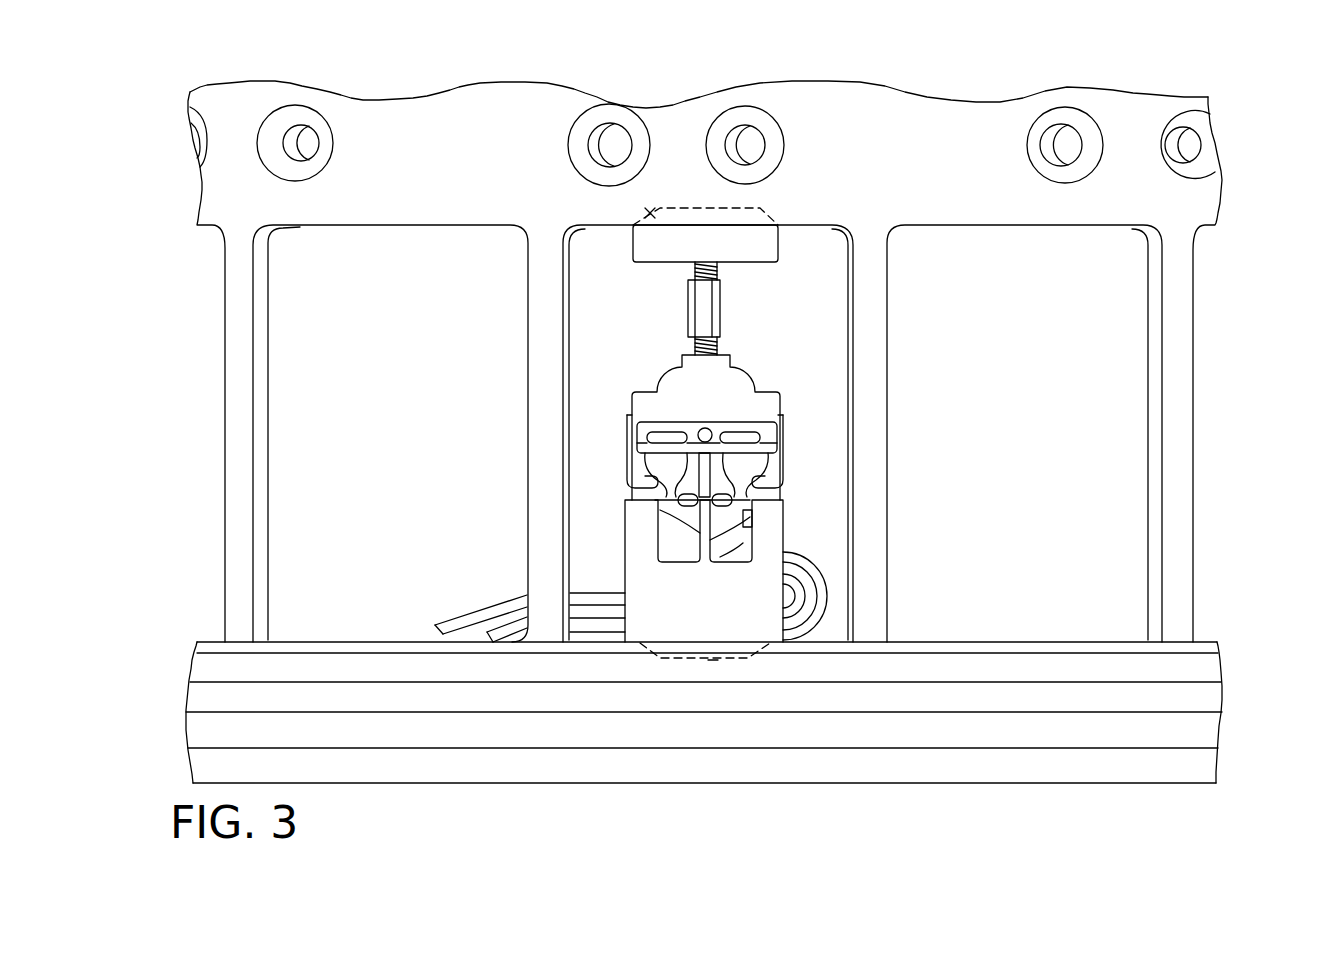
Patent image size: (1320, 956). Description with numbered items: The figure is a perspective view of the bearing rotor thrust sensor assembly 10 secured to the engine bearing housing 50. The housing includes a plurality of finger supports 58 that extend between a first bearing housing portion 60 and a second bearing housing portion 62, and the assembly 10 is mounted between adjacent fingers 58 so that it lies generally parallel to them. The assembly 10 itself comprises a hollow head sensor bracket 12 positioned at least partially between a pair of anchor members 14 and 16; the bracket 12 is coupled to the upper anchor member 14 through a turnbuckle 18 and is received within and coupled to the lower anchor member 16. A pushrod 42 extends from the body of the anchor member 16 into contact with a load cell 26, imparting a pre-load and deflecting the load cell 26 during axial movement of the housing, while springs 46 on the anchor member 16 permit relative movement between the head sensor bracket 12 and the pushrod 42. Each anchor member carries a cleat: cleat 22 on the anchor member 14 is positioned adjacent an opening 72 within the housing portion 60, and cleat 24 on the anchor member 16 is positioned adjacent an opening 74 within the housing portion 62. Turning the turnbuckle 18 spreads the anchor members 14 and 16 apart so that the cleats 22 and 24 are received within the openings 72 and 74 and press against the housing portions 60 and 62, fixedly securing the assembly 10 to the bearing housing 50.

The bearing rotor thrust sensor assembly 10 is at (607, 330).
The head sensor bracket 12 is at (652, 386).
The anchor member 14 is at (763, 266).
The anchor member 16 is at (794, 504).
The turnbuckle 18 is at (727, 320).
The cleat 22 is at (765, 207).
The cleat 24 is at (658, 658).
The load cell 26 is at (752, 460).
The pushrod 42 is at (708, 458).
The springs 46 is at (610, 486).
The engine bearing housing 50 is at (1182, 79).
The finger supports 58 is at (528, 453).
The bearing housing portion 60 is at (929, 90).
The bearing housing portion 62 is at (701, 786).
The opening 72 is at (646, 212).
The opening 74 is at (713, 662).